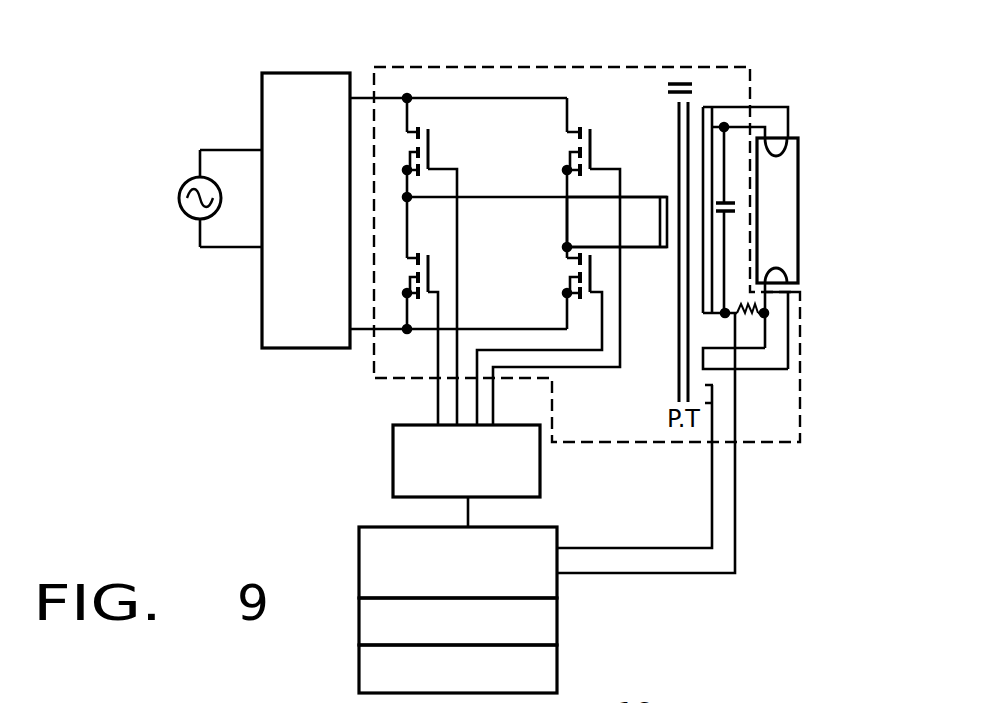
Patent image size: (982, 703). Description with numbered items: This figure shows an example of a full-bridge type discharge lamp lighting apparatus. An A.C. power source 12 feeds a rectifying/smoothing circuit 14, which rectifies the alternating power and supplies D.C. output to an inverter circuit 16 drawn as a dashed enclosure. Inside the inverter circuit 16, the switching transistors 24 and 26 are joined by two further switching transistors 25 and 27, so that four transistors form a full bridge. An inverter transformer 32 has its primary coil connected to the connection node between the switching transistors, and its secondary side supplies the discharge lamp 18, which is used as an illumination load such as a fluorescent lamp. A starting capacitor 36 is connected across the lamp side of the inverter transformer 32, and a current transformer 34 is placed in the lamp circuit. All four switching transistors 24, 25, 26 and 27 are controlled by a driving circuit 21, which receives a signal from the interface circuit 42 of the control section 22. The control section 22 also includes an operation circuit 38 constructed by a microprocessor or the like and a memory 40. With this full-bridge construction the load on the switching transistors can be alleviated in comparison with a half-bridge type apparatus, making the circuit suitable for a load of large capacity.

The A.C. power source 12 is at (178, 199).
The rectifying/smoothing circuit 14 is at (262, 287).
The inverter circuit 16 is at (620, 67).
The discharge lamp 18 is at (797, 243).
The driving circuit 21 is at (393, 460).
The control section 22 is at (455, 615).
The switching transistor 24 is at (425, 133).
The switching transistor 25 is at (598, 148).
The switching transistor 26 is at (420, 258).
The switching transistor 27 is at (565, 275).
The inverter transformer 32 is at (672, 263).
The current transformer 34 is at (742, 333).
The starting capacitor 36 is at (742, 203).
The operation circuit 38 is at (557, 672).
The memory 40 is at (557, 620).
The interface circuit 42 is at (359, 568).